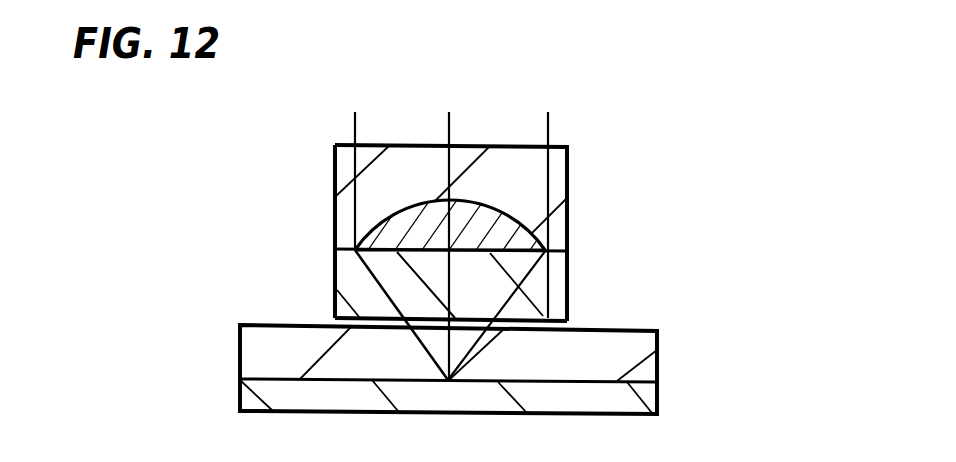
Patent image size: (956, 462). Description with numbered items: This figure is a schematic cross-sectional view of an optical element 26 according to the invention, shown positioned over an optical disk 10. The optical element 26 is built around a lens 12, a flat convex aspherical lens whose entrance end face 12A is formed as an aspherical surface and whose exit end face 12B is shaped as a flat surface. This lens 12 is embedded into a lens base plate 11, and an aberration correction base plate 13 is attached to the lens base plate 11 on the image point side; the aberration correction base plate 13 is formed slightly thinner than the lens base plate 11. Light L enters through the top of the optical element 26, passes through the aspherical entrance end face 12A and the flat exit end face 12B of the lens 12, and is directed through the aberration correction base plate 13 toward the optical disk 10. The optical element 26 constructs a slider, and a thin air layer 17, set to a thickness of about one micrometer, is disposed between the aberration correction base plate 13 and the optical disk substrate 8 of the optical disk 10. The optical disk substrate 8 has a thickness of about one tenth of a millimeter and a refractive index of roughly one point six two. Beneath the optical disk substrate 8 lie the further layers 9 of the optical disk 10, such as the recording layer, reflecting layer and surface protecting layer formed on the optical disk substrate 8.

The light beam L is at (548, 130).
The optical element 26 is at (482, 233).
The lens base plate 11 is at (528, 183).
The lens 12 is at (456, 216).
The entrance end face 12A is at (408, 206).
The exit end face 12B is at (416, 256).
The aberration correction base plate 13 is at (543, 287).
The air layer 17 is at (357, 315).
The optical disk 10 is at (533, 371).
The optical disk substrate 8 is at (657, 363).
The base layer 9 is at (657, 398).